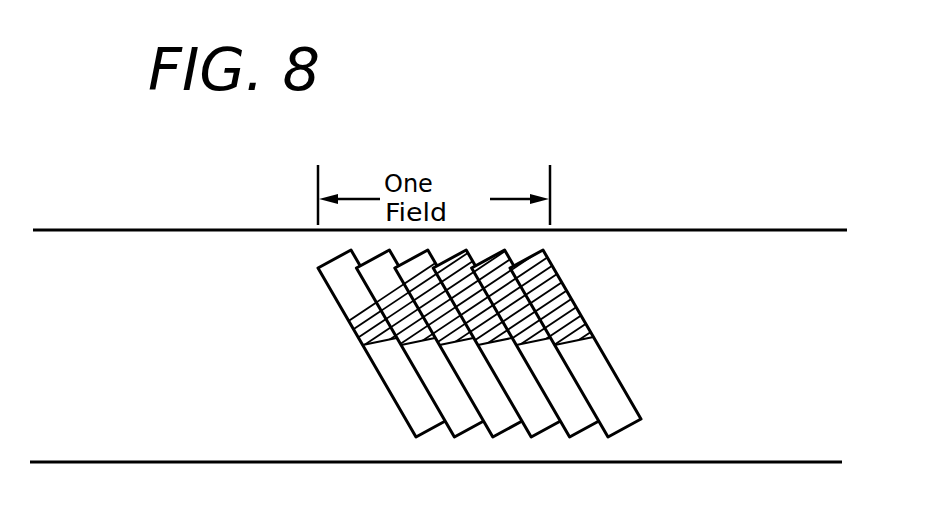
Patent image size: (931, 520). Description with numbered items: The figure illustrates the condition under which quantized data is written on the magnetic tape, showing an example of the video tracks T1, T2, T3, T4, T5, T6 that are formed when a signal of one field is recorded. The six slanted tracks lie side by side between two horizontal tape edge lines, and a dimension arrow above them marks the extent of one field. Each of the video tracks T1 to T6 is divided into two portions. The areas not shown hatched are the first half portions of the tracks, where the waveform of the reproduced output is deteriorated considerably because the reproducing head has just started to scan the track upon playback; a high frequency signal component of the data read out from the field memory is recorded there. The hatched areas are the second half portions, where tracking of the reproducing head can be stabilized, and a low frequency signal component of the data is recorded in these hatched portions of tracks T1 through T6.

The video track T1 is at (450, 303).
The video track T2 is at (450, 303).
The video track T3 is at (450, 303).
The video track T4 is at (450, 303).
The video track T5 is at (450, 303).
The video track T6 is at (450, 303).